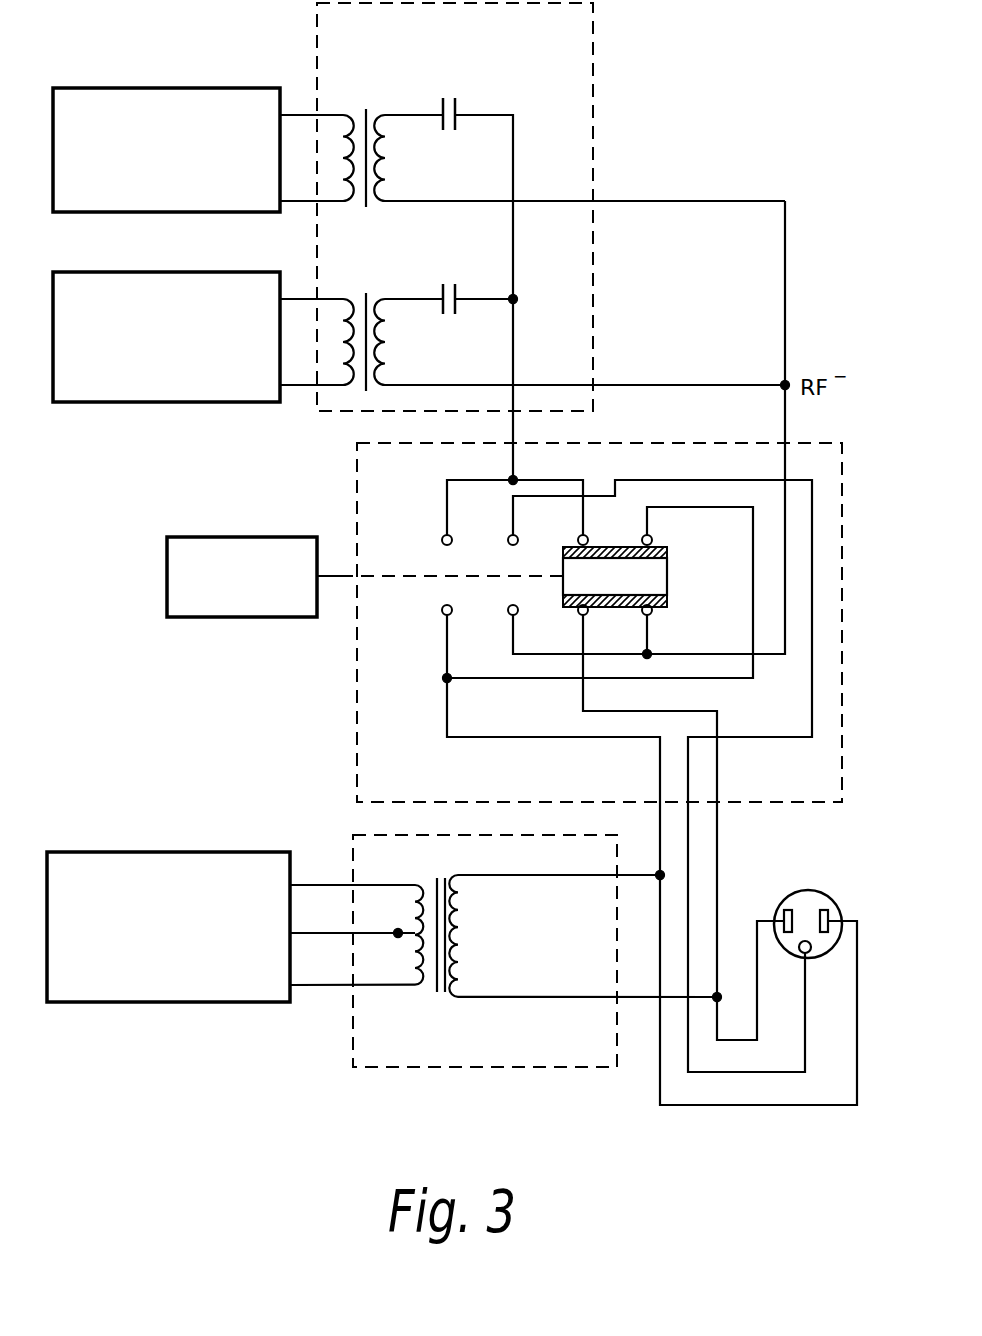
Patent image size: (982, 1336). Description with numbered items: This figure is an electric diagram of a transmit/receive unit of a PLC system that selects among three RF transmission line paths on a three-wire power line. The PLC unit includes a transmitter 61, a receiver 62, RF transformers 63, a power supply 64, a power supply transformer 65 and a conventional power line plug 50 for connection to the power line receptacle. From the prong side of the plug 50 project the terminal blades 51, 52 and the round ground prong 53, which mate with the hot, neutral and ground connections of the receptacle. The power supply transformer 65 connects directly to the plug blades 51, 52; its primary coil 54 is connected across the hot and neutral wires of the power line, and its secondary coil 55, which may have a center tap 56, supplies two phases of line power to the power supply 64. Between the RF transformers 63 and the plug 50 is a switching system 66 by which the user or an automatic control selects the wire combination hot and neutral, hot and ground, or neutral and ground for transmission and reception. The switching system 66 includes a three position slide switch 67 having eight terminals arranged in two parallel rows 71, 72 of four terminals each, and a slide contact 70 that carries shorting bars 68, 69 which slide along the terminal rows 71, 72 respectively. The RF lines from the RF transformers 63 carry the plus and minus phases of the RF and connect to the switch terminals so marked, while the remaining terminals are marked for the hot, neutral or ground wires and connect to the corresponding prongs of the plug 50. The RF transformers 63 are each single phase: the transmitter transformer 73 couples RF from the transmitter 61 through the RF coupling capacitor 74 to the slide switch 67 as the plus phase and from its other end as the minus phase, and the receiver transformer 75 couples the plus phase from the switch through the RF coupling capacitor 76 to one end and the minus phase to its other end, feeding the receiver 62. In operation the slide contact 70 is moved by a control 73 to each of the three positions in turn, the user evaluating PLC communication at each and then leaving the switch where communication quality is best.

The power line plug 50 is at (807, 915).
The terminal blade 51 is at (829, 908).
The terminal blade 52 is at (787, 908).
The round ground prong 53 is at (797, 953).
The primary coil 54 is at (460, 920).
The secondary coil 55 is at (413, 915).
The center tap 56 is at (330, 934).
The transmitter 61 is at (147, 88).
The receiver 62 is at (127, 403).
The RF transformers 63 is at (593, 45).
The power supply 64 is at (167, 852).
The power supply transformer 65 is at (520, 1068).
The switching system 66 is at (554, 791).
The three position slide switch 67 is at (355, 736).
The shorting bar 68 is at (668, 553).
The shorting bar 69 is at (668, 603).
The slide contact 70 is at (676, 576).
The terminal row 71 is at (437, 539).
The terminal row 72 is at (437, 611).
The transmitter transformer 73 is at (378, 215).
The RF coupling capacitor 74 is at (447, 133).
The receiver transformer 75 is at (374, 283).
The RF coupling capacitor 76 is at (447, 318).